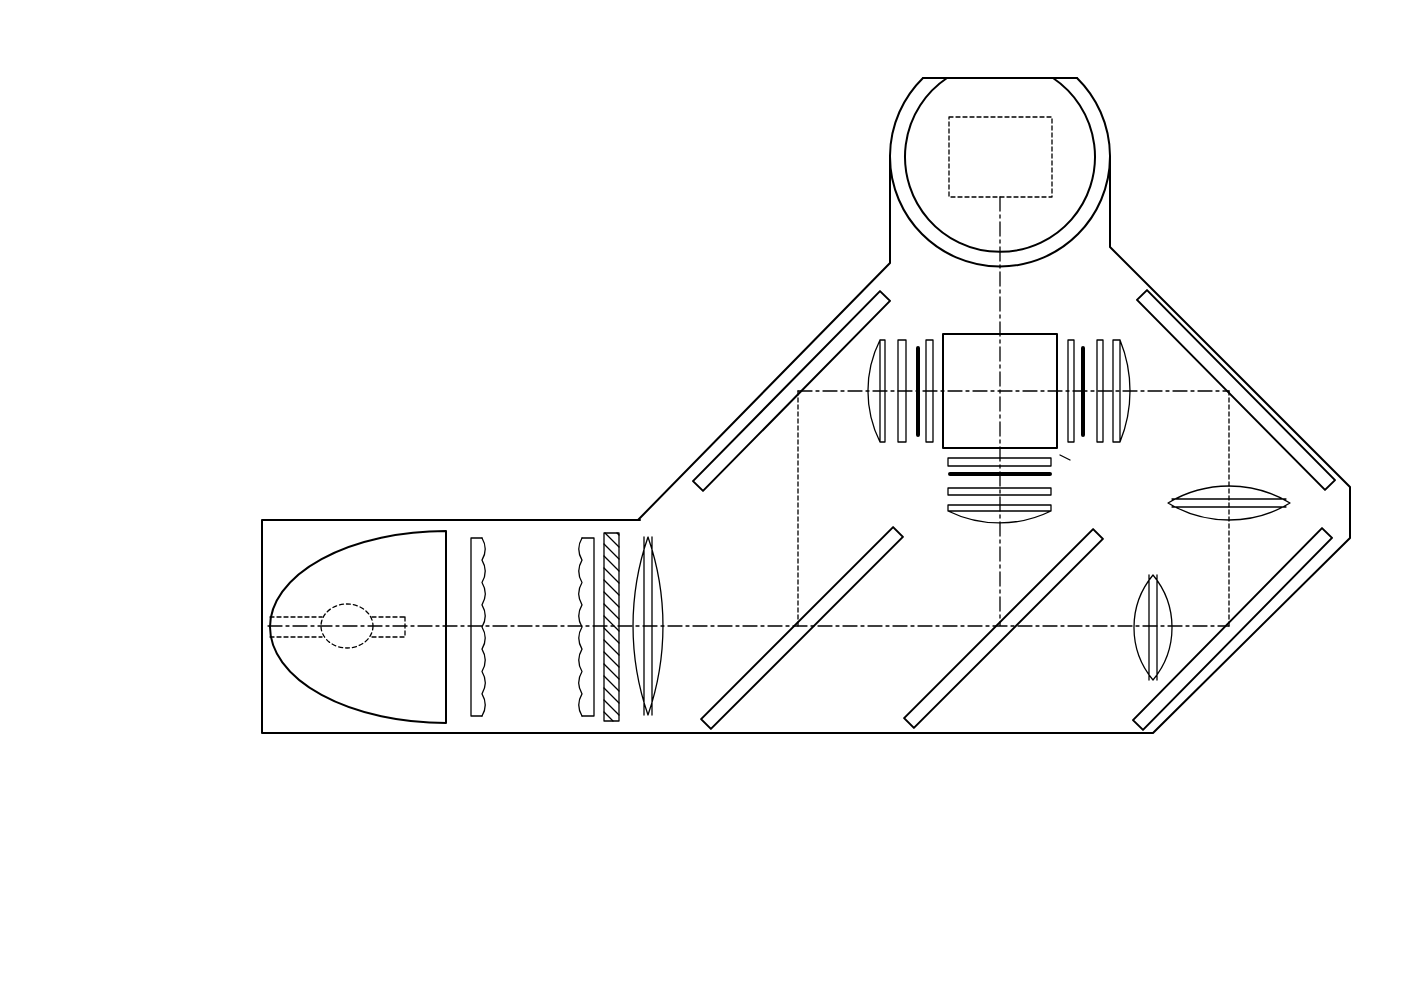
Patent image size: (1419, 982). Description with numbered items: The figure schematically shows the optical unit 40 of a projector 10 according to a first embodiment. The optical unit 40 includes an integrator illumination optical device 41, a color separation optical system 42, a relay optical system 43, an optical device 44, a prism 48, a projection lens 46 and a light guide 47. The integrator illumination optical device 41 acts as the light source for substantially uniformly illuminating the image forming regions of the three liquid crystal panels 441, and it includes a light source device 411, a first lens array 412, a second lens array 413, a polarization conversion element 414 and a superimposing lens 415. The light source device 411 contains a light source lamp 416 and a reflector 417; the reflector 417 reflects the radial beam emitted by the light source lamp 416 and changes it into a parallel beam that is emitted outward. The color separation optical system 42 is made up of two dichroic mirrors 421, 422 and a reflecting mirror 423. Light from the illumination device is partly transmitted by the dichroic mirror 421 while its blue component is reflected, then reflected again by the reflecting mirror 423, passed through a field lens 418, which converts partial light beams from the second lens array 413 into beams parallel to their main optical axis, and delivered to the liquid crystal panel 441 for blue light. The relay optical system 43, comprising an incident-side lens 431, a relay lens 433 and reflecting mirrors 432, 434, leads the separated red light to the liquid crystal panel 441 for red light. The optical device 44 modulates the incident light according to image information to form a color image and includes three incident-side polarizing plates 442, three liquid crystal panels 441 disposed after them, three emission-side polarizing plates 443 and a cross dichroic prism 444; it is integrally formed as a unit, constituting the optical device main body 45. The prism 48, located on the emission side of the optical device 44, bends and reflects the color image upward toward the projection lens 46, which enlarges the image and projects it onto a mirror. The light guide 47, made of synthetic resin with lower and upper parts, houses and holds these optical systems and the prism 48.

The projector 10 is at (437, 132).
The optical unit 40 is at (475, 270).
The integrator illumination optical device 41 is at (372, 505).
The light source device 411 is at (195, 643).
The light source lamp 416 is at (290, 647).
The reflector 417 is at (305, 690).
The light guide 47 is at (490, 520).
The first lens array 412 is at (483, 718).
The second lens array 413 is at (585, 718).
The polarization conversion element 414 is at (613, 722).
The superimposing lens 415 is at (640, 548).
The color separation optical system 42 is at (860, 750).
The dichroic mirror 421 is at (738, 703).
The dichroic mirror 422 is at (933, 707).
The reflecting mirror 423 is at (747, 423).
The relay optical system 43 is at (1310, 350).
The incident-side lens 431 is at (1135, 640).
The reflecting mirror 432 is at (1195, 670).
The relay lens 433 is at (1275, 503).
The reflecting mirror 434 is at (1297, 442).
The optical device 44 is at (907, 458).
The liquid crystal panel 441 is at (1120, 520).
The incident-side polarizing plate 442 is at (900, 340).
The emission-side polarizing plate 443 is at (928, 340).
The cross dichroic prism 444 is at (1032, 343).
The field lens 418 is at (868, 410).
The optical device main body 45 is at (1082, 460).
The projection lens 46 is at (1078, 128).
The prism 48 is at (980, 117).